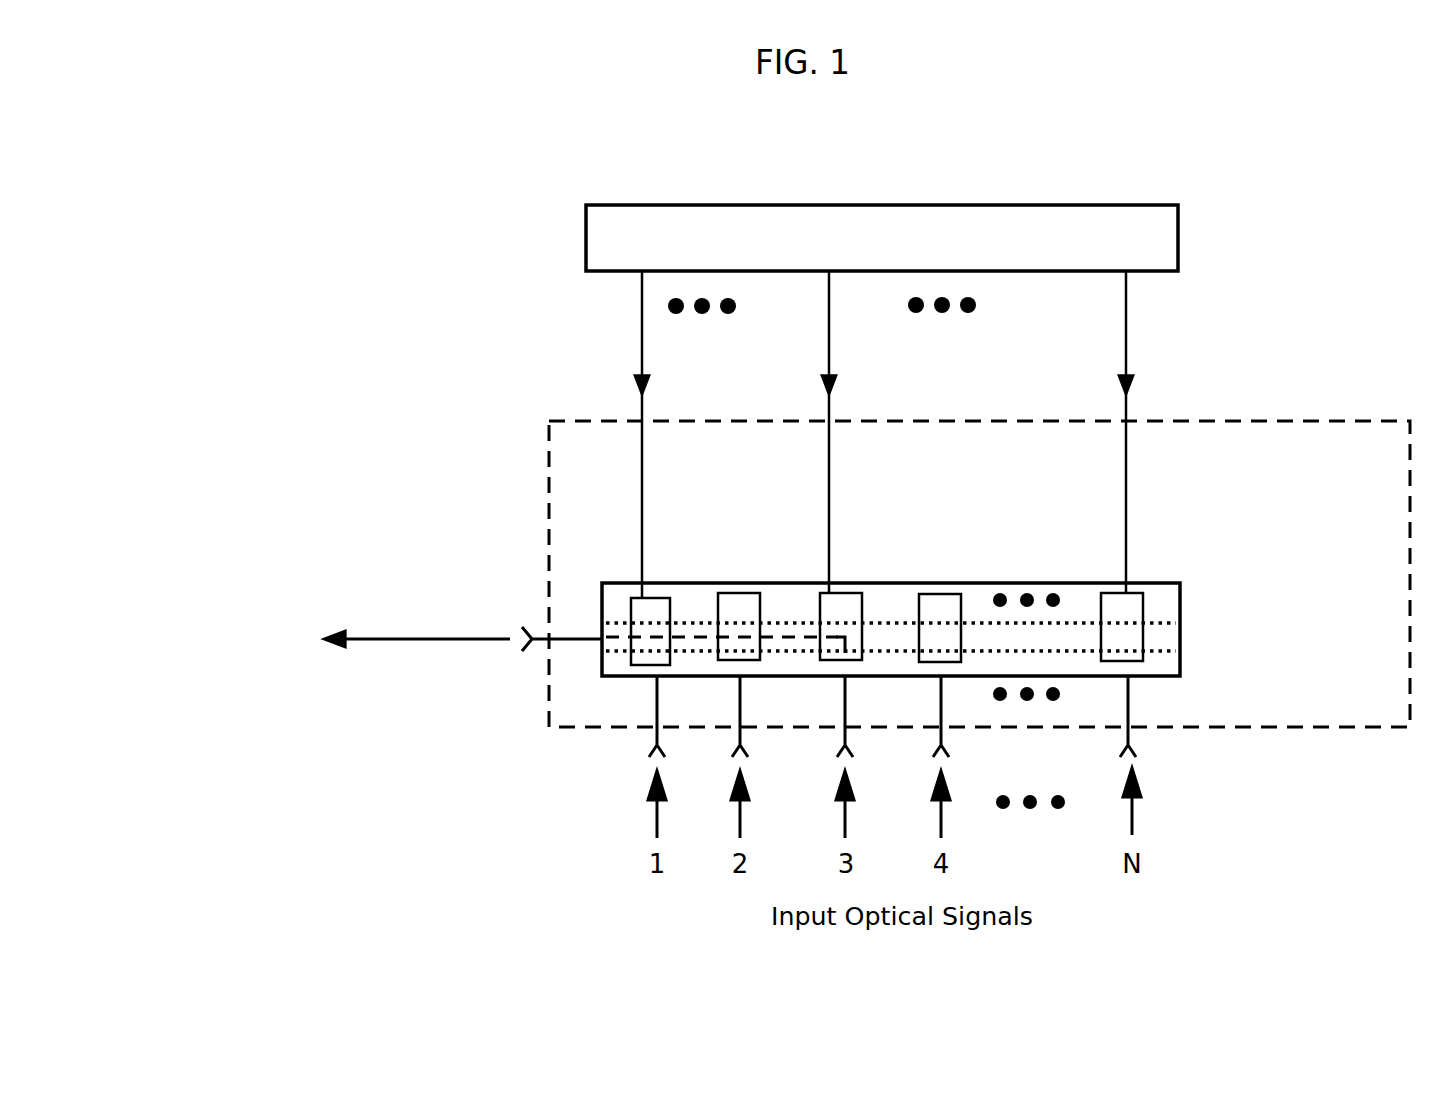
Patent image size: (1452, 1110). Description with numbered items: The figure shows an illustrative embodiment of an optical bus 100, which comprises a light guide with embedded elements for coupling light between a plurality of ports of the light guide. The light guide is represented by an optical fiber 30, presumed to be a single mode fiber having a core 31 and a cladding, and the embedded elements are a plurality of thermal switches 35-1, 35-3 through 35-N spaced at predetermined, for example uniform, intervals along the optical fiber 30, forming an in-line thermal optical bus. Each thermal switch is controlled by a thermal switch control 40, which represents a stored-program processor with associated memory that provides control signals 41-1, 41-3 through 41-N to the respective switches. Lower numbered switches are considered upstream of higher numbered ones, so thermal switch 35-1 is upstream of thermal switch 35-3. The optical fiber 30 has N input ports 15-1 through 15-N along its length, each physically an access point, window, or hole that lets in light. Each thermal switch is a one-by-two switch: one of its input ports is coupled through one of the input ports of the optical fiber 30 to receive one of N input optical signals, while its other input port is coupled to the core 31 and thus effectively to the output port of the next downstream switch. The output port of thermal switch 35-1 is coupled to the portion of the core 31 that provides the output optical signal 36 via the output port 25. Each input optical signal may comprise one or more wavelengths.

The thermal switch control 40 is at (882, 238).
The control signal 41-1 is at (614, 434).
The control signal 41-3 is at (802, 432).
The control signal 41-N is at (1092, 432).
The optical bus 100 is at (1382, 708).
The optical fiber 30 is at (1287, 525).
The core 31 is at (1247, 645).
The thermal switch 35-1 is at (677, 602).
The thermal switch 35-3 is at (870, 608).
The thermal switch 35-N is at (1099, 597).
The output port 25 is at (520, 611).
The output optical signal 36 is at (357, 646).
The input port 15-1 is at (632, 744).
The input port 15-N is at (1148, 738).